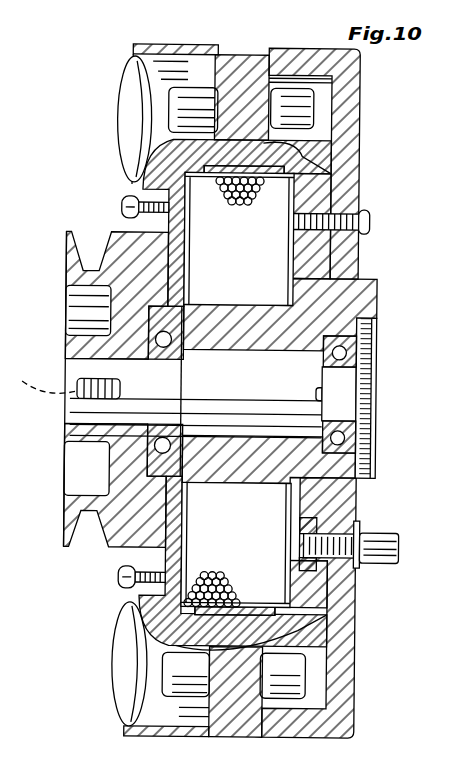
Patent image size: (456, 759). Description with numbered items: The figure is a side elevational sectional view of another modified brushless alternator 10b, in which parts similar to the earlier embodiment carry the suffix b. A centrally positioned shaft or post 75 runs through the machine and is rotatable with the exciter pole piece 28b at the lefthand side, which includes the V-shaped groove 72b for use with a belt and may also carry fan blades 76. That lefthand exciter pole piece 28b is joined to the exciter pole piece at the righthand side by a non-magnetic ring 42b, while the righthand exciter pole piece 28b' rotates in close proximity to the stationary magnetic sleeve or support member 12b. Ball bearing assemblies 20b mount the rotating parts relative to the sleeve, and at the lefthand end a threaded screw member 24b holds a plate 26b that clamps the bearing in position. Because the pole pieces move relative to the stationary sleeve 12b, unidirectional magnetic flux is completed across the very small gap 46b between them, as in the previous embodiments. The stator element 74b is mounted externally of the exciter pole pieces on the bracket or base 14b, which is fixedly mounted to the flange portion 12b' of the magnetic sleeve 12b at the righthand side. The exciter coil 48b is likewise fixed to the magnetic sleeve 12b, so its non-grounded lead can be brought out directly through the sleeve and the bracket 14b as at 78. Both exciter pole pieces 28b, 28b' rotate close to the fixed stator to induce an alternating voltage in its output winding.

The brushless alternator 10b is at (139, 44).
The bracket or base 14b is at (343, 142).
The stator element 74b is at (248, 62).
The fan blades 76 is at (118, 115).
The exciter pole piece 28b is at (209, 393).
The exciter pole piece 28b' is at (296, 396).
The non-magnetic ring 42b is at (282, 162).
The flange portion 12b' is at (352, 390).
The V-shaped groove 72b is at (80, 258).
The plate 26b is at (66, 340).
The threaded screw member 24b is at (183, 390).
The magnetic sleeve or support member 12b is at (278, 380).
The shaft or post 75 is at (286, 375).
The ball bearing assembly 20b is at (165, 470).
The gap 46b is at (270, 348).
The exciter coil 48b is at (262, 587).
The lead 78 is at (355, 573).